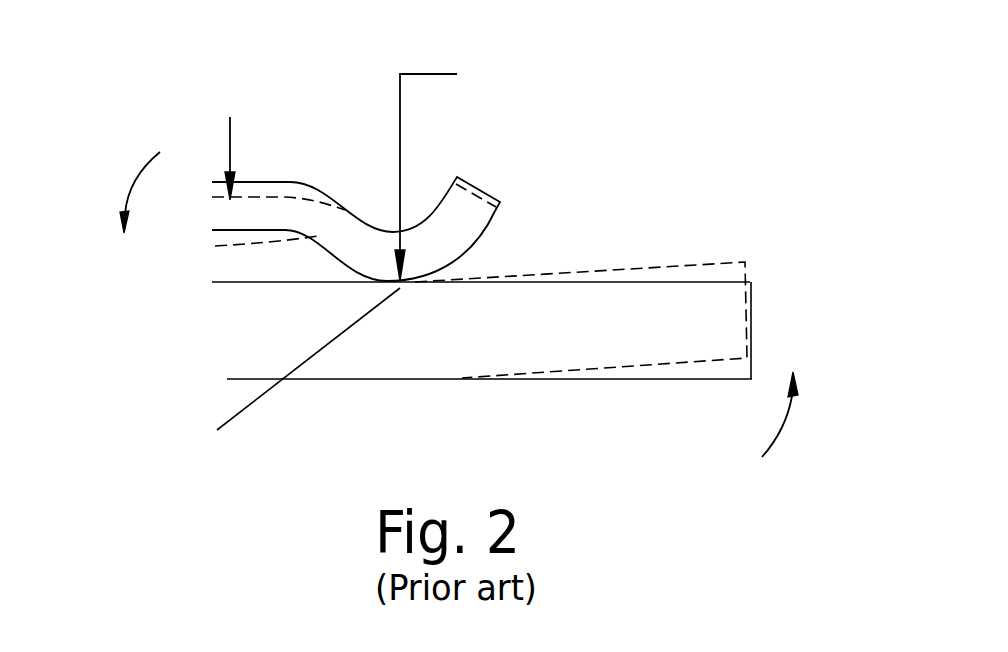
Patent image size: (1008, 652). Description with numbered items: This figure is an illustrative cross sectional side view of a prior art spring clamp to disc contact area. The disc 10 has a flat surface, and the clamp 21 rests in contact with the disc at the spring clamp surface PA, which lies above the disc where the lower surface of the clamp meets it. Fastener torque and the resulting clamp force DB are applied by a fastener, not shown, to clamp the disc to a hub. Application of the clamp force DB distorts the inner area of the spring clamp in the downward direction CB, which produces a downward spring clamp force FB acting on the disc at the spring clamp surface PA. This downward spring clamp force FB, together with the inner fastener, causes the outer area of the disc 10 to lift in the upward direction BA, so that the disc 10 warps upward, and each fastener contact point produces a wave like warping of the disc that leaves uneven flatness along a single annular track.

The disc 10 is at (678, 275).
The clamp 21 is at (505, 197).
The clamp force DB is at (235, 124).
The downward spring clamp force FB is at (447, 165).
The downward direction CB is at (156, 167).
The spring clamp surface PA is at (287, 381).
The upward direction BA is at (765, 435).